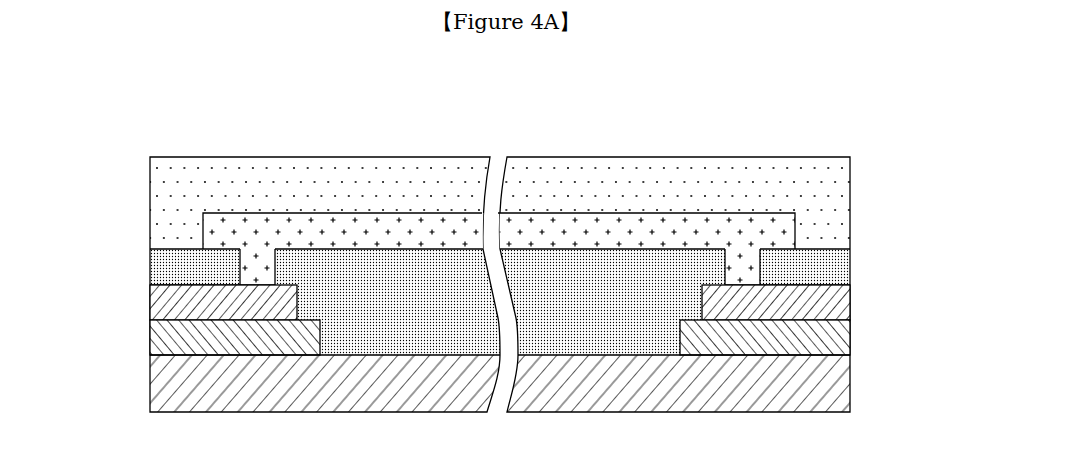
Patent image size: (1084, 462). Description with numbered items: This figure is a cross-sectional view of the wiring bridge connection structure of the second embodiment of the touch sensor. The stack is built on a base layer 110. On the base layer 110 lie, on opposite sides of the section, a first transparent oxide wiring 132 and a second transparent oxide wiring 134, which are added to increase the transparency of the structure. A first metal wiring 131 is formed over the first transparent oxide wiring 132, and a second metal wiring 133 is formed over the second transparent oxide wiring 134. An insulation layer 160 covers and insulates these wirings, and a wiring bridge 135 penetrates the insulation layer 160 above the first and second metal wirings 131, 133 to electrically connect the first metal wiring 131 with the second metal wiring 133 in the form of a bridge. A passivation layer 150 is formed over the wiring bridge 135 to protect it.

The base layer 110 is at (852, 385).
The first metal wiring 131 is at (852, 303).
The first transparent oxide wiring 132 is at (852, 338).
The second metal wiring 133 is at (150, 302).
The second transparent oxide wiring 134 is at (150, 340).
The wiring bridge 135 is at (697, 228).
The passivation layer 150 is at (317, 165).
The insulation layer 160 is at (600, 257).